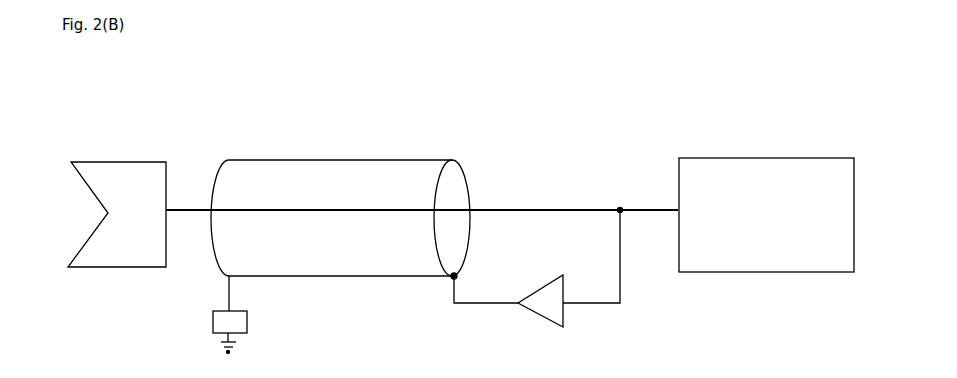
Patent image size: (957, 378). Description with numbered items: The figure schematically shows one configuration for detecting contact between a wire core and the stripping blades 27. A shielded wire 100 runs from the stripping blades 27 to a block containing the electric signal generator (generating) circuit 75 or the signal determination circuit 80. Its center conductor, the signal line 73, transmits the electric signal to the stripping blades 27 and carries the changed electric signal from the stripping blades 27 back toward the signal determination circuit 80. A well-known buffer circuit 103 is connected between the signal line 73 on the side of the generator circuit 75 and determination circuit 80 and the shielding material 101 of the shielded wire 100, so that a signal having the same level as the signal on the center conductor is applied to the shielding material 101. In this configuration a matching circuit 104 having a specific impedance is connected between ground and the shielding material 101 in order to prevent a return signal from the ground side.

The stripping blades 27 is at (130, 203).
The center conductor (signal line) 73 is at (540, 208).
The shielded wire 100 is at (330, 178).
The shielding material (metal conductor) 101 is at (306, 258).
The buffer circuit 103 is at (542, 308).
The matching circuit 104 is at (216, 322).
The electric signal generator (generating) circuit 75 is at (766, 215).
The signal determination circuit 80 is at (761, 229).